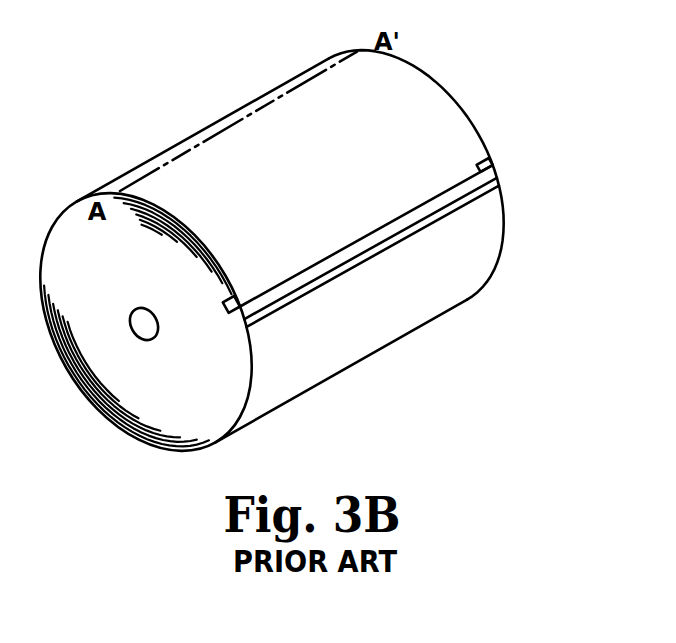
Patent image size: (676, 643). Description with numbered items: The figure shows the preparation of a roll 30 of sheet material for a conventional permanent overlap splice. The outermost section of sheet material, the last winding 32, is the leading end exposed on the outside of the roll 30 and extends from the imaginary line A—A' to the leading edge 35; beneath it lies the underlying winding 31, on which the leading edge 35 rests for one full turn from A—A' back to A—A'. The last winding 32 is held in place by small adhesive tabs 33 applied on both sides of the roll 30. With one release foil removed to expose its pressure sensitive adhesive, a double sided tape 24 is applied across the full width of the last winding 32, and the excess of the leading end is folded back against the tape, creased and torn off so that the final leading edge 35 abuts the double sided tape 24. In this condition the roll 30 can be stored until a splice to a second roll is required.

The roll 30 is at (162, 91).
The underlying winding 31 is at (468, 227).
The last winding 32 is at (410, 92).
The double sided tape 24 is at (354, 250).
The leading edge 35 is at (340, 277).
The adhesive tabs 33 is at (226, 302).